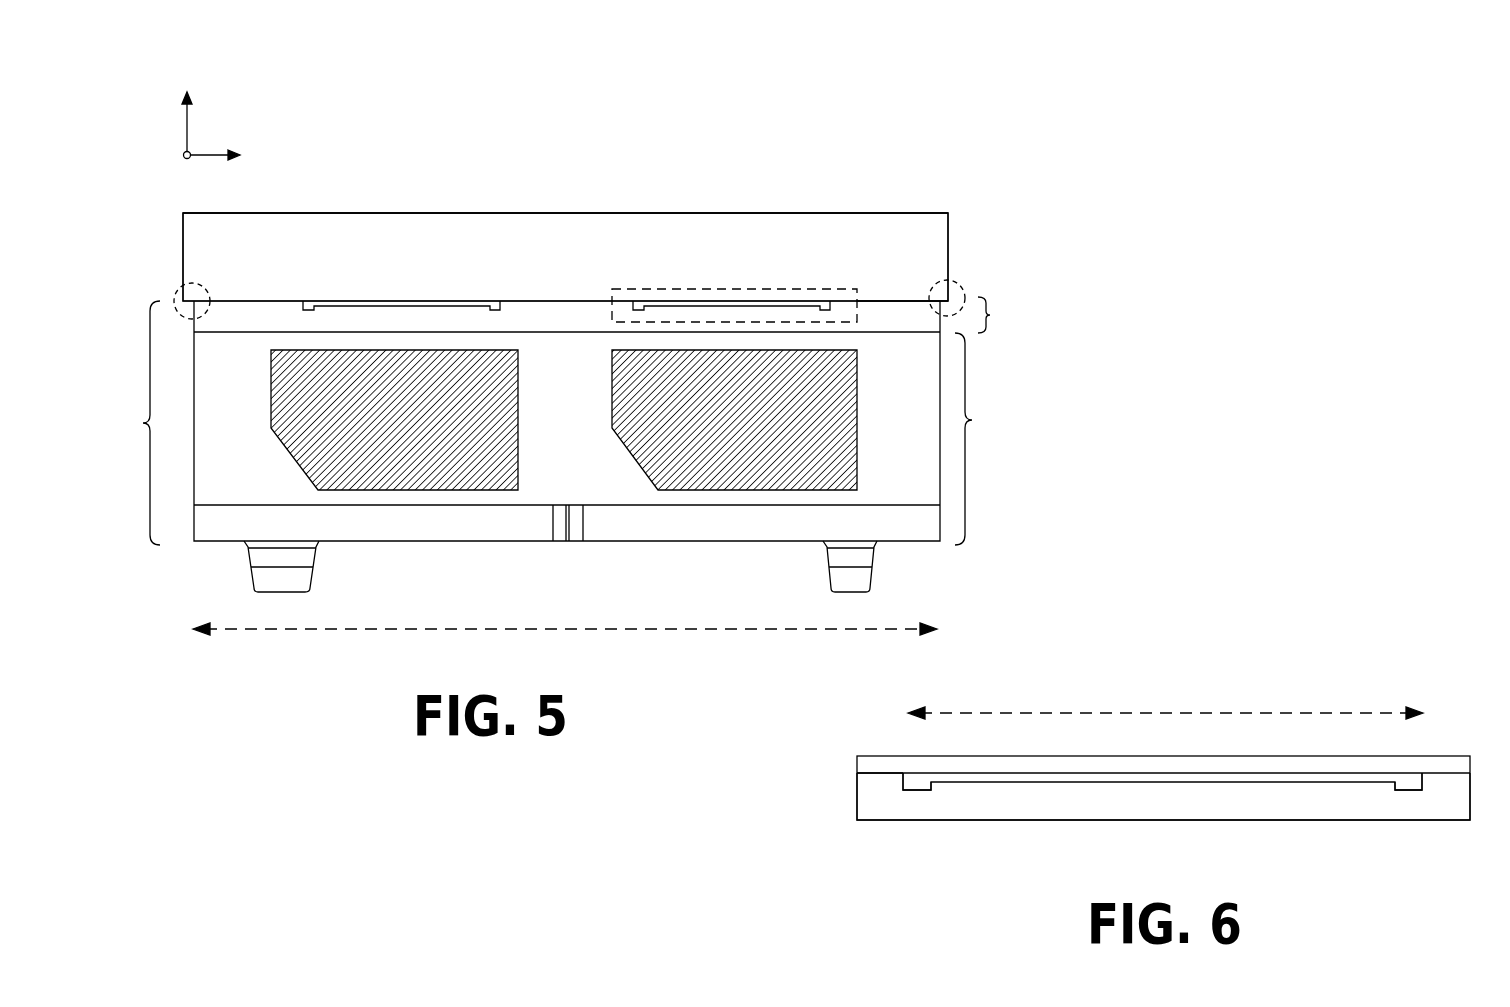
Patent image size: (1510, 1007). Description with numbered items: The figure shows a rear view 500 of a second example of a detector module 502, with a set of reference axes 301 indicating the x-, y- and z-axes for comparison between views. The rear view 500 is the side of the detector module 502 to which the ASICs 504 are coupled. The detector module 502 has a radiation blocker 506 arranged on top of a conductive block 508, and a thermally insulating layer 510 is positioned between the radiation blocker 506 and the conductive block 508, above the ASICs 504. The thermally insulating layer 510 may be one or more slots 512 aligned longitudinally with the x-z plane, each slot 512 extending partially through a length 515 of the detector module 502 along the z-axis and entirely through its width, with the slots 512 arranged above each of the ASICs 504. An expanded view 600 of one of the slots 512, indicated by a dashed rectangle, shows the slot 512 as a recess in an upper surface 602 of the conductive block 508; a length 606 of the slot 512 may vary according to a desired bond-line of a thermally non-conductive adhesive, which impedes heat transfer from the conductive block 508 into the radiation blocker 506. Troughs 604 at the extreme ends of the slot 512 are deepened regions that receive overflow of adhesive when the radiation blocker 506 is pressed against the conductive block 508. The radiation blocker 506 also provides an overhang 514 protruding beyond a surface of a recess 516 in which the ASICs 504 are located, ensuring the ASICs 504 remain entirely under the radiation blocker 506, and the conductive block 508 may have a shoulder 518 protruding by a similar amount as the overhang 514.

In FIG. 5, the reference axes 301 is at (160, 100).
In FIG. 5, the rear view 500 is at (405, 135).
In FIG. 5, the detector module 502 is at (778, 186).
In FIG. 5, the ASICs 504 is at (412, 424).
In FIG. 5, the radiation blocker 506 is at (535, 255).
In FIG. 6, the radiation blocker 506 is at (1292, 762).
In FIG. 5, the conductive block 508 is at (130, 423).
In FIG. 6, the conductive block 508 is at (1240, 805).
In FIG. 5, the thermally insulating layer 510 is at (883, 292).
In FIG. 5, the slots 512 is at (385, 300).
In FIG. 6, the slots 512 is at (1083, 778).
In FIG. 5, the overhang 514 is at (178, 292).
In FIG. 5, the length 515 is at (362, 632).
In FIG. 5, the recess 516 is at (987, 439).
In FIG. 5, the shoulder 518 is at (1008, 315).
In FIG. 5, the expanded view 600 is at (748, 290).
In FIG. 6, the expanded view 600 is at (1345, 620).
In FIG. 6, the upper surface 602 is at (880, 772).
In FIG. 6, the troughs 604 is at (922, 792).
In FIG. 6, the length of the slot 606 is at (1192, 713).